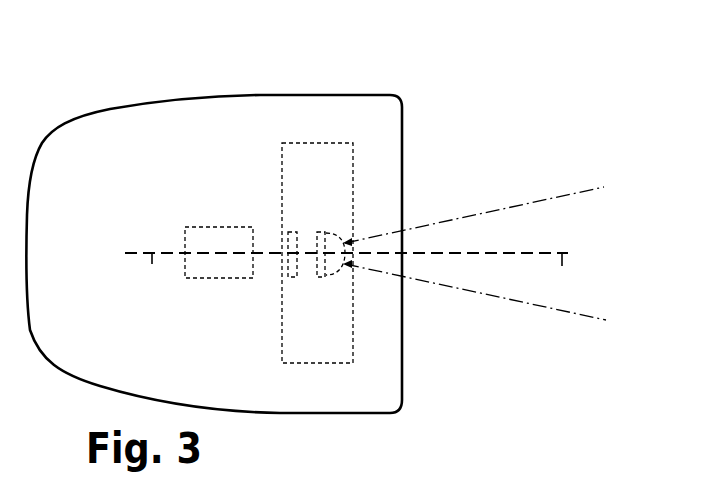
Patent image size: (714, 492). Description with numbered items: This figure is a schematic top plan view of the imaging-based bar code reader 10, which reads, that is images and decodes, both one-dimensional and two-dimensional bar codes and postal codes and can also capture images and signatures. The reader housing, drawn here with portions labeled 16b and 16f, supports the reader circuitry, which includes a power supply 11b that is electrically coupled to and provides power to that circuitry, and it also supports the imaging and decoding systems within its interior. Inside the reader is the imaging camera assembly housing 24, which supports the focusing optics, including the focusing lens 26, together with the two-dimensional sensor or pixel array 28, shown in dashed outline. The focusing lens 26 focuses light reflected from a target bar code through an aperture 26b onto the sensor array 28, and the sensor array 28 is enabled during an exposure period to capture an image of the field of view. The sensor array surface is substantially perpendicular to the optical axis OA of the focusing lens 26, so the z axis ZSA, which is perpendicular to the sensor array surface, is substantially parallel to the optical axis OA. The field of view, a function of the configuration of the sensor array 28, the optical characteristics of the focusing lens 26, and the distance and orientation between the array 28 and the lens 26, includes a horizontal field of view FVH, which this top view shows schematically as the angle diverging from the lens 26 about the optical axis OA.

The bar code reader 10 is at (76, 78).
The mirror casing top 16b is at (186, 82).
The mirror casing front face 16f is at (403, 167).
The housing 24 is at (325, 143).
The aperture 26b is at (318, 229).
The power supply 11b is at (230, 253).
The sensor array 28 is at (287, 264).
The focusing lens 26 is at (339, 269).
The z axis ZSA is at (152, 255).
The optical axis OA is at (562, 258).
The horizontal field of view FVH is at (602, 192).